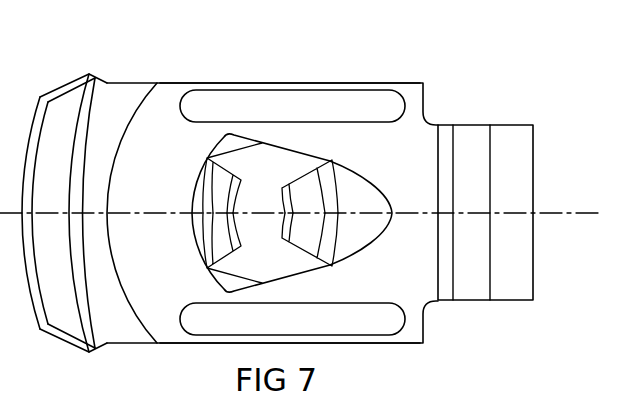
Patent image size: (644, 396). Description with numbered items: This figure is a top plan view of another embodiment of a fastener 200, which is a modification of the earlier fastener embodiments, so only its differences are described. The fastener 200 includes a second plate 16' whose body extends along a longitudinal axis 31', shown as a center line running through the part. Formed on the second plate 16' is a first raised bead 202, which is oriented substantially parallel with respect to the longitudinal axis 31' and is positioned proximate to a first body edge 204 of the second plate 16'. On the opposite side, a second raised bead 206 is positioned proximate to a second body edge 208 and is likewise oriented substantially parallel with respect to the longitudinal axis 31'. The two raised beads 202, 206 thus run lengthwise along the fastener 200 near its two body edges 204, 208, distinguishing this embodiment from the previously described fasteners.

The fastener 200 is at (277, 196).
The second plate 16' is at (95, 200).
The first raised bead 202 is at (330, 98).
The first body edge 204 is at (294, 81).
The second raised bead 206 is at (393, 317).
The second body edge 208 is at (363, 346).
The longitudinal axis 31' is at (300, 194).